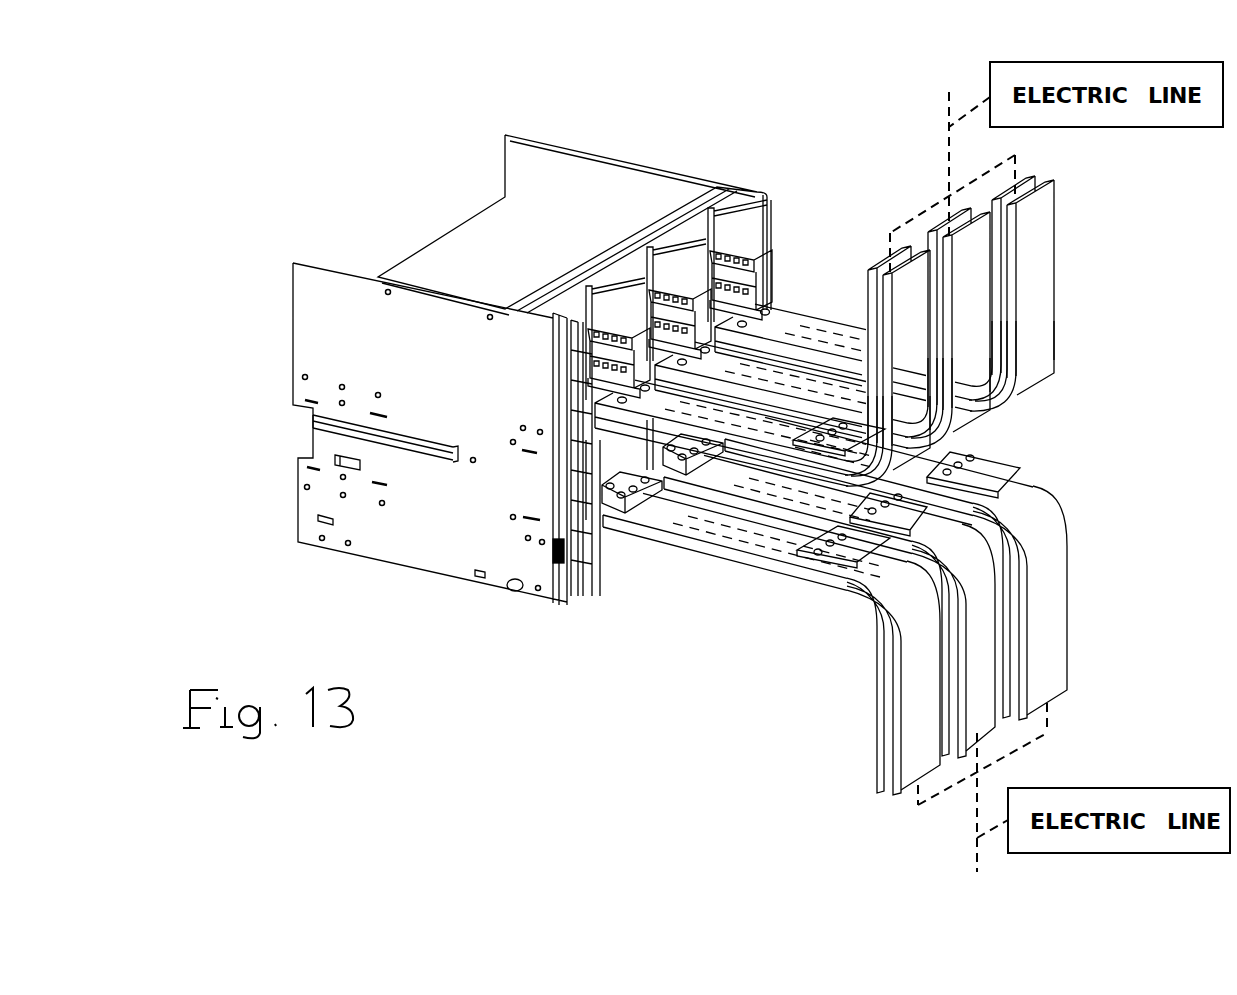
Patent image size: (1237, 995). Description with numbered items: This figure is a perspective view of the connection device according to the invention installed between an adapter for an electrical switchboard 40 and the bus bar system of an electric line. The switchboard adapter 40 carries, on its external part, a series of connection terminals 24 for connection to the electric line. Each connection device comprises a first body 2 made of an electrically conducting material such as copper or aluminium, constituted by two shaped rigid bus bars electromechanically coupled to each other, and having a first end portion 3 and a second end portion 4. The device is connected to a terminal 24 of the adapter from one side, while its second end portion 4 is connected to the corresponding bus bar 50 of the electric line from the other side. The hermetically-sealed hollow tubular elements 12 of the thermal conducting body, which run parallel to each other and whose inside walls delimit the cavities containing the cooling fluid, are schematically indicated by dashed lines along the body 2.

The first body 2 is at (814, 320).
The first end portion 3 is at (612, 525).
The second end portion 4 is at (828, 574).
The hermetically-sealed hollow tubular element 12 is at (777, 544).
The connection terminal 24 is at (766, 299).
The adapter for an electrical switchboard 40 is at (389, 542).
The bus bar 50 is at (923, 393).